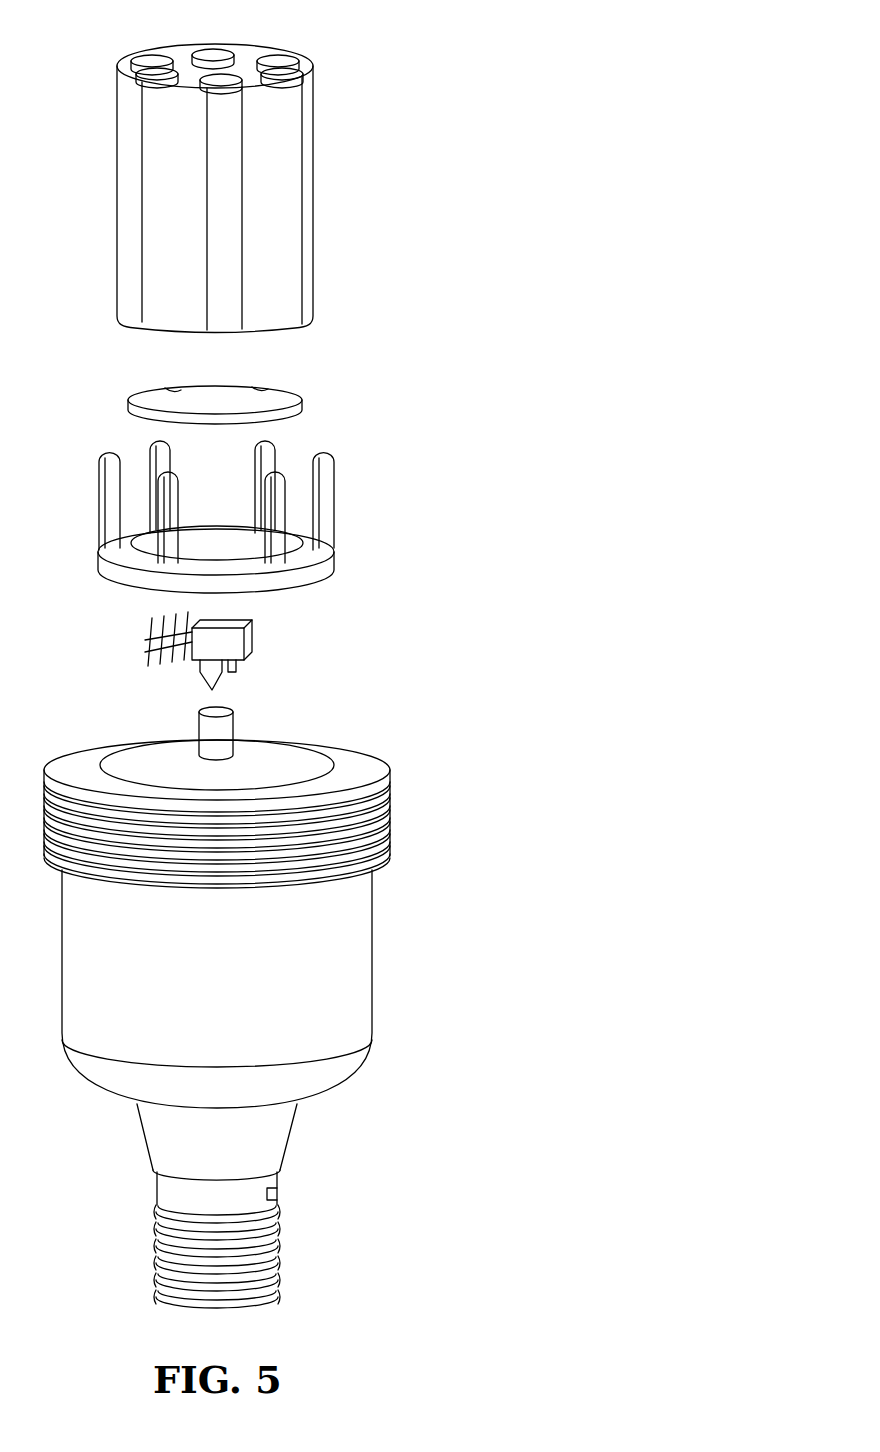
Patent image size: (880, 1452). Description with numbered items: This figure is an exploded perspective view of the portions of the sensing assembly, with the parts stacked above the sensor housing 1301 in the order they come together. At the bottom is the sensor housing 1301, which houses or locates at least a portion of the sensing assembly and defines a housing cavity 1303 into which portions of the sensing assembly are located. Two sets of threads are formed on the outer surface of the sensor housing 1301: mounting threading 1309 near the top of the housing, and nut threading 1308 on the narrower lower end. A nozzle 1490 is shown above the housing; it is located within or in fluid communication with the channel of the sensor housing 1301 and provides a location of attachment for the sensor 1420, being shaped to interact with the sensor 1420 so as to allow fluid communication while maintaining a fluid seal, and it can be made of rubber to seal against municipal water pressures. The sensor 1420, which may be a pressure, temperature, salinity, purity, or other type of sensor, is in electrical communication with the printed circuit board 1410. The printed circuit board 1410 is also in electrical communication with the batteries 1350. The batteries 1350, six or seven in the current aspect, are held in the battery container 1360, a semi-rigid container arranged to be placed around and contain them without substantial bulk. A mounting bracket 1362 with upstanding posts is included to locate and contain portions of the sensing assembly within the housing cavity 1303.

The batteries 1350 is at (292, 57).
The battery container 1360 is at (283, 315).
The printed circuit board 1410 is at (303, 400).
The mounting bracket 1362 is at (311, 562).
The sensor 1420 is at (245, 628).
The nozzle 1490 is at (233, 722).
The housing cavity 1303 is at (300, 762).
The mounting threading 1309 is at (392, 808).
The sensor housing 1301 is at (372, 932).
The nut threading 1308 is at (278, 1247).